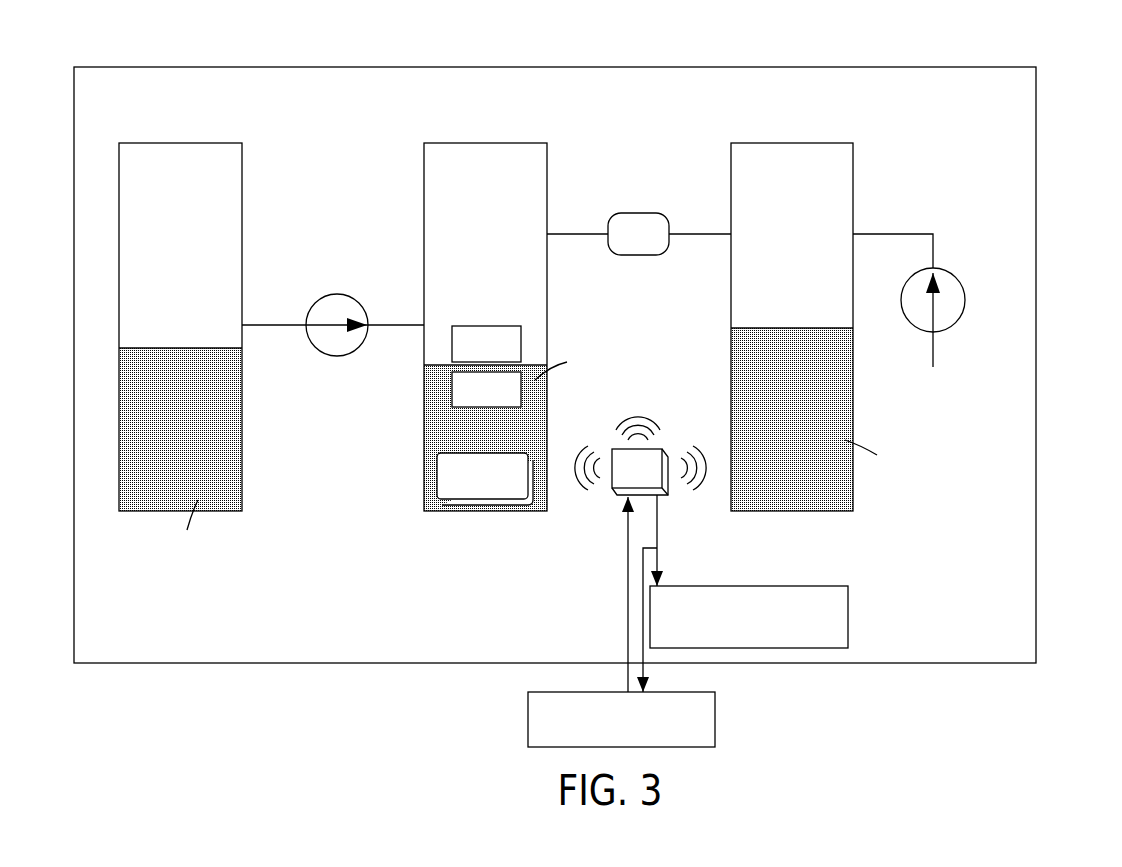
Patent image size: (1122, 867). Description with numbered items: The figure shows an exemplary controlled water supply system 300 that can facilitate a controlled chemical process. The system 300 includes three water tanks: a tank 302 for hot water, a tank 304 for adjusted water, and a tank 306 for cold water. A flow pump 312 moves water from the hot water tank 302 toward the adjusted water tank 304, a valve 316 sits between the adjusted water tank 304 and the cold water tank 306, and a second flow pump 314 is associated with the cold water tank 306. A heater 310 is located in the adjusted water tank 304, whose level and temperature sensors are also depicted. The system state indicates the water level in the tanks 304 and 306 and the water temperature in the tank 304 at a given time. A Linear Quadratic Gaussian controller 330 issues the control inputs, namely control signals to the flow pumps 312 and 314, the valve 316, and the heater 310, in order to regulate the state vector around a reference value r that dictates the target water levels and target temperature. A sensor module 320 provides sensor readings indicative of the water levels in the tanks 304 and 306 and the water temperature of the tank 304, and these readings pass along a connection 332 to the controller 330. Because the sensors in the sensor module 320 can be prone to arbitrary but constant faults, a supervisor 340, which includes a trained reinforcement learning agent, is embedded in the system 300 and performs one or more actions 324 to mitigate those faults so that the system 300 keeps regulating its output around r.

The controlled water supply system 300 is at (1037, 92).
The water tank 302 is at (242, 177).
The water tank 304 is at (424, 169).
The water tank 306 is at (855, 172).
The heater 310 is at (436, 473).
The flow pump 312 is at (333, 357).
The flow pump 314 is at (955, 318).
The valve 316 is at (637, 212).
The sensor module 320 is at (621, 498).
The actions 324 is at (628, 614).
The Linear Quadratic Gaussian controller 330 is at (851, 614).
The communication line to controller 332 is at (658, 540).
The supervisor 340 is at (716, 718).